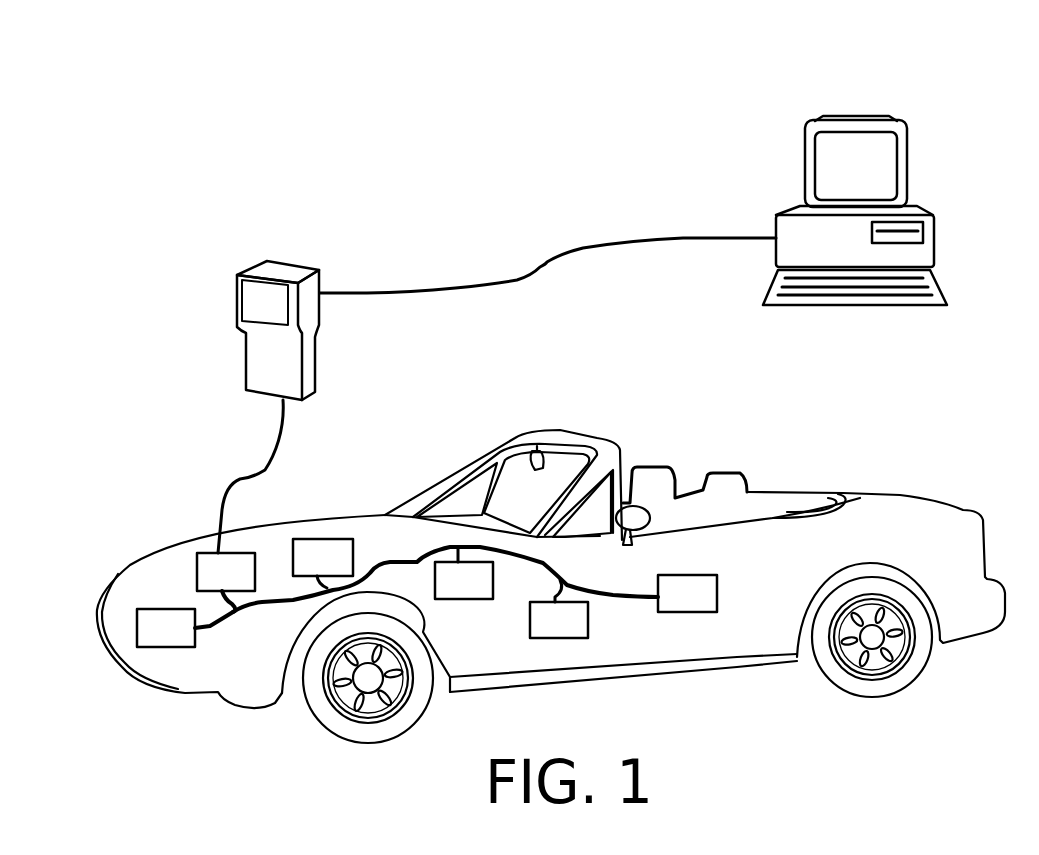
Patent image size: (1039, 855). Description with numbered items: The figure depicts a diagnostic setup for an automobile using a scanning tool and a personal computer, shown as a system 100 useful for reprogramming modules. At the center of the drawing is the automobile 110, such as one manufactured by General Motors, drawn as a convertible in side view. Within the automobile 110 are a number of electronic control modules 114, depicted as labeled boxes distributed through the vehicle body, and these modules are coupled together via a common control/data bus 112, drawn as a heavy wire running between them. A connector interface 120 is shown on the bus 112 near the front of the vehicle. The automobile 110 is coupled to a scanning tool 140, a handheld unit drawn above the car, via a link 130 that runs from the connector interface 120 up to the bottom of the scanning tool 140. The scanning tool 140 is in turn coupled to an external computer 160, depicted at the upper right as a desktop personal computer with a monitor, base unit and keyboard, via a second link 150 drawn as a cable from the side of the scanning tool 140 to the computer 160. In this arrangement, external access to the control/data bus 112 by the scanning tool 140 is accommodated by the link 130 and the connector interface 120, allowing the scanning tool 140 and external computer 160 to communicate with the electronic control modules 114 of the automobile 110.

The system 100 is at (262, 182).
The automobile 110 is at (938, 553).
The control/data bus 112 is at (613, 597).
The electronic control modules 114 is at (185, 638).
The connector interface 120 is at (243, 582).
The link 130 is at (247, 475).
The scanning tool 140 is at (245, 338).
The link 150 is at (588, 248).
The external computer 160 is at (845, 118).